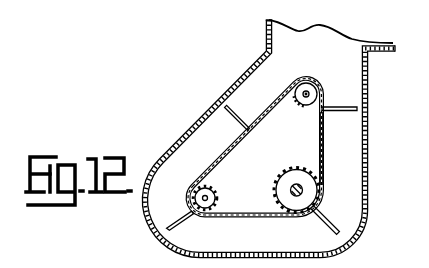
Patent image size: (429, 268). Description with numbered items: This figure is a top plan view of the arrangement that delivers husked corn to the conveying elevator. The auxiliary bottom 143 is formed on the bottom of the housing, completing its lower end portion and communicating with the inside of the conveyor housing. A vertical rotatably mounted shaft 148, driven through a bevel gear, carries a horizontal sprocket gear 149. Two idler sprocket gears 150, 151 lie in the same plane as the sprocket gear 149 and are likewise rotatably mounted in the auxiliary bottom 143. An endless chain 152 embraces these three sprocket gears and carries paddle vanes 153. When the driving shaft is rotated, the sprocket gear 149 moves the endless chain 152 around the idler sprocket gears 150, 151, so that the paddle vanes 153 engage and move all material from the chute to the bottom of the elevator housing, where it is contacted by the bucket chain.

The auxiliary bottom 143 is at (363, 160).
The vertical rotatably mounted shaft 148 is at (296, 184).
The horizontal sprocket gear 149 is at (273, 192).
The idler sprocket gear 150 is at (215, 193).
The idler sprocket gear 151 is at (300, 105).
The endless chain 152 is at (338, 148).
The paddle vanes 153 is at (240, 113).